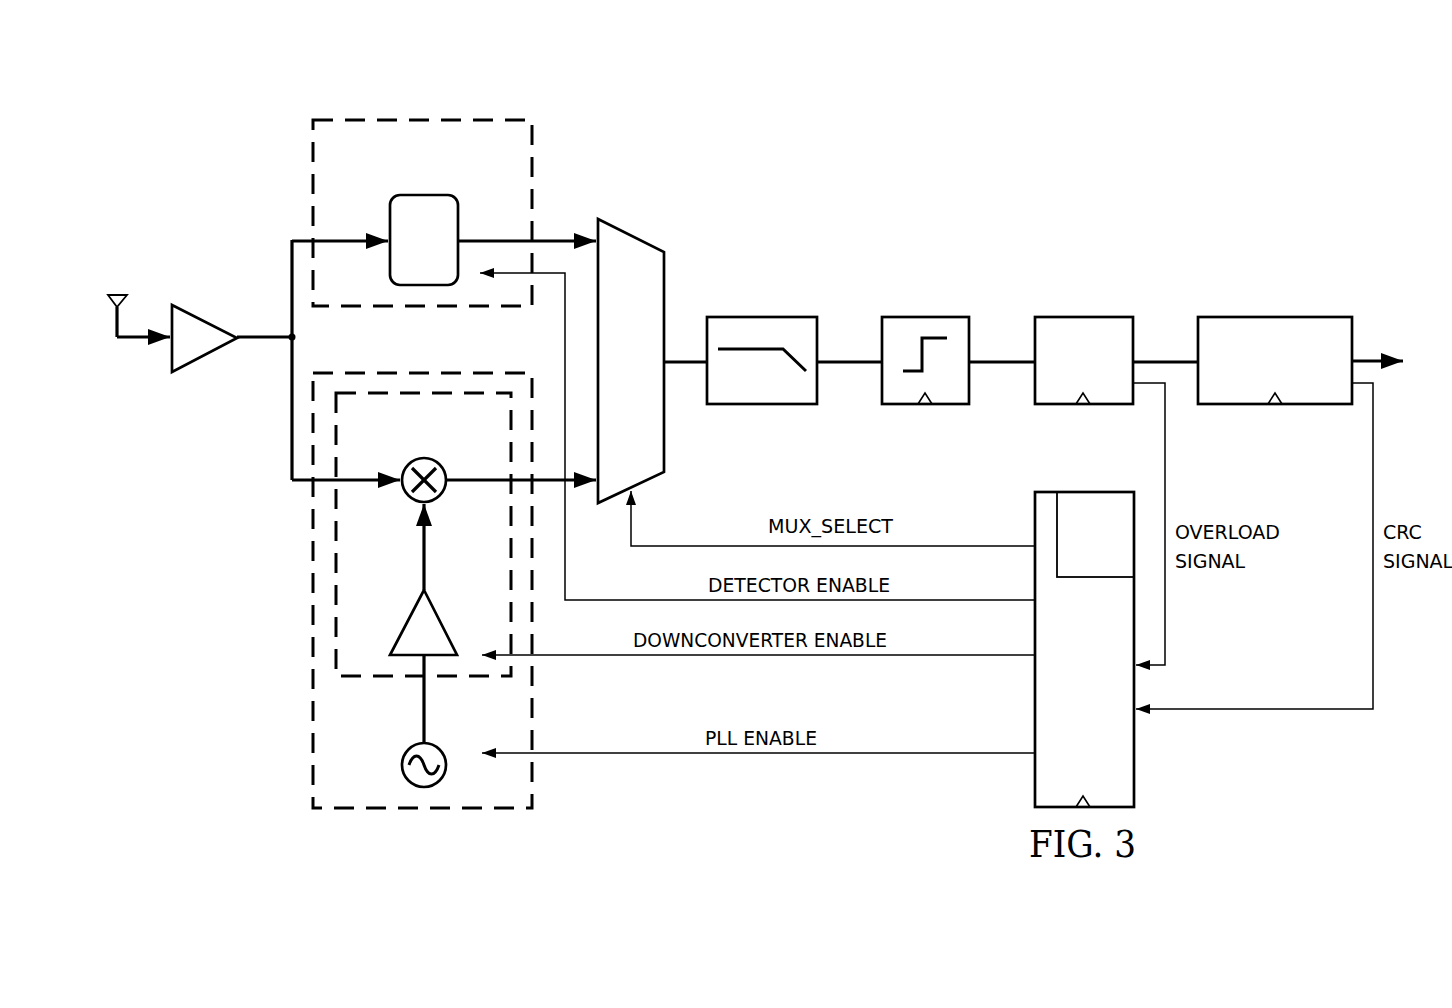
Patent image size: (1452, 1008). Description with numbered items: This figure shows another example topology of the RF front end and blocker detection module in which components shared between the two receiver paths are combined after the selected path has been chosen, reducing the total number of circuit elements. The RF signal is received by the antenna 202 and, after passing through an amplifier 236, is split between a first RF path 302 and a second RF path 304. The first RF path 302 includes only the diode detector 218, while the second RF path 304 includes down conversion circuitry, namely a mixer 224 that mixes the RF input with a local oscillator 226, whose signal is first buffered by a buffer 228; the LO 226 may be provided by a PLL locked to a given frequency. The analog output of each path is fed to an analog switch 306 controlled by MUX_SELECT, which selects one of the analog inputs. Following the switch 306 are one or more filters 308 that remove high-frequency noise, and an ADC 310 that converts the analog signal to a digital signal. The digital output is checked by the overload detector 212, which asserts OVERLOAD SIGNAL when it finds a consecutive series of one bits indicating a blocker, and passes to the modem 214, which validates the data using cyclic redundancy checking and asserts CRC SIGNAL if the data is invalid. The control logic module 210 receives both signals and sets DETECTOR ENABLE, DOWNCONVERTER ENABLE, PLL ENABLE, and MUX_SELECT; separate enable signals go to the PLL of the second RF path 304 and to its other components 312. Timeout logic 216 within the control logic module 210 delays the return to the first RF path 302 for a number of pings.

The antenna 202 is at (117, 294).
The low noise amplifier 236 is at (207, 321).
The first RF path 302 is at (396, 116).
The diode detector 218 is at (425, 194).
The analog switch 306 is at (627, 231).
The filters 308 is at (762, 316).
The ADC 310 is at (925, 316).
The overload detector 212 is at (1089, 316).
The modem 214 is at (1275, 316).
The timeout logic 216 is at (1099, 500).
The control logic module 210 is at (1105, 668).
The mixer 224 is at (413, 459).
The buffer 228 is at (405, 625).
The local oscillator 226 is at (402, 766).
The other components of second RF path 312 is at (371, 680).
The second RF path 304 is at (371, 812).